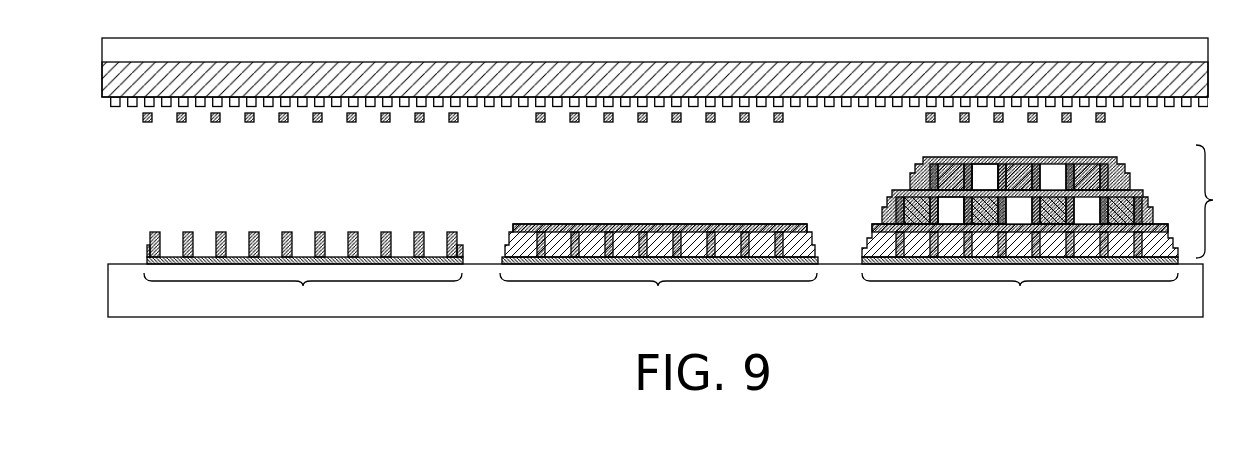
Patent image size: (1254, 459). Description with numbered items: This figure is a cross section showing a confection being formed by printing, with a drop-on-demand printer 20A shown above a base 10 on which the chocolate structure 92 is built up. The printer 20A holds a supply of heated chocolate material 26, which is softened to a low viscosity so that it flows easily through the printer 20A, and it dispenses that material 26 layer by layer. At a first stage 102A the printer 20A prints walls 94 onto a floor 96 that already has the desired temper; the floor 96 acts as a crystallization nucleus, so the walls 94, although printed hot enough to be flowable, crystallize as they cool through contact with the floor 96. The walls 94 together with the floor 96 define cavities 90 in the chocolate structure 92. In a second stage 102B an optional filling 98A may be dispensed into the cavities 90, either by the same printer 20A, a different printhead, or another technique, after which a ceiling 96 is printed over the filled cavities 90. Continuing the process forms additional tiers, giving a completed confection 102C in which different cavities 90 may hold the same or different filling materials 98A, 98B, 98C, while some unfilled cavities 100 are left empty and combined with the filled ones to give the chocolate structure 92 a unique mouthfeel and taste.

The substrate 10 is at (118, 292).
The drop-on-demand printer 20A is at (678, 45).
The material 26 is at (390, 72).
The cavities 90 is at (235, 242).
The walls 94 is at (423, 232).
The floor 96 is at (147, 260).
The filling 98A is at (588, 237).
The filling material 98B is at (1020, 157).
The filling material 98C is at (1090, 157).
The unfilled cavities 100 is at (985, 179).
The chocolate structure 92 is at (1221, 201).
The first stage 102A is at (303, 292).
The second stage 102B is at (658, 292).
The completed confection 102C is at (1020, 292).